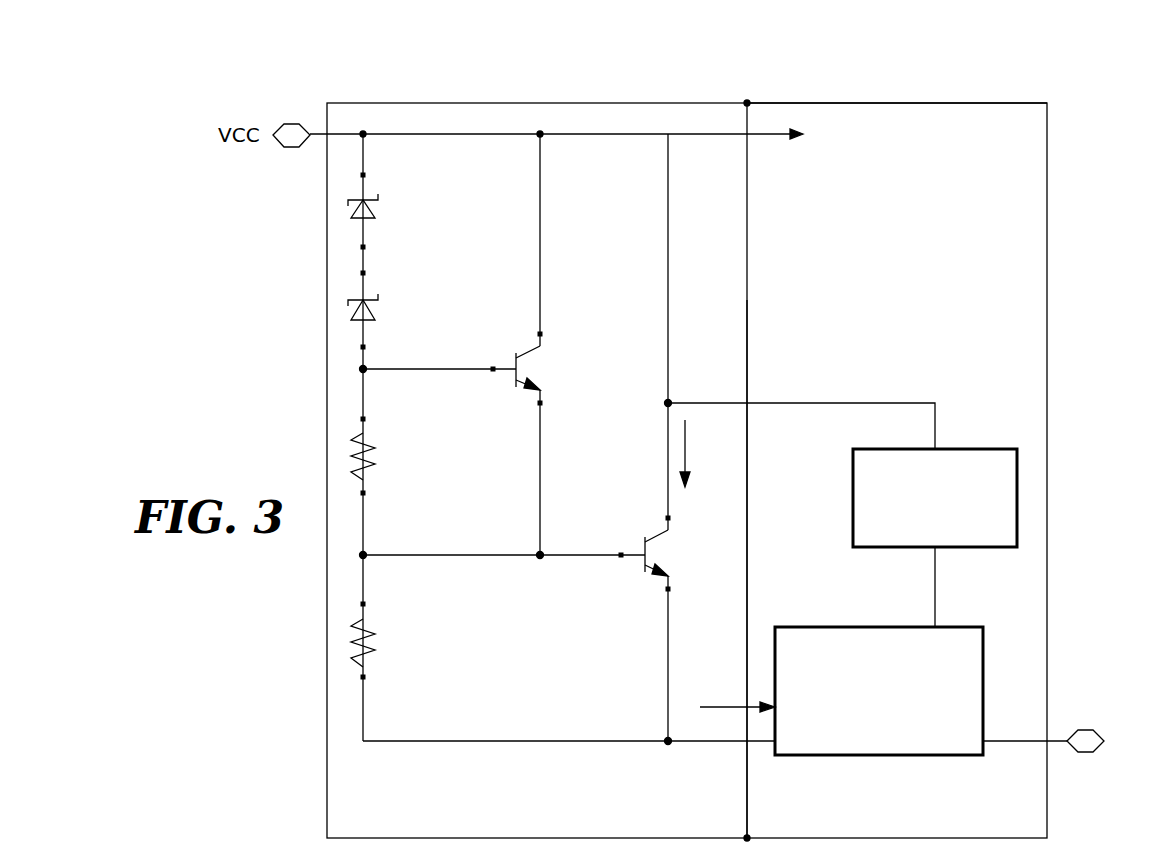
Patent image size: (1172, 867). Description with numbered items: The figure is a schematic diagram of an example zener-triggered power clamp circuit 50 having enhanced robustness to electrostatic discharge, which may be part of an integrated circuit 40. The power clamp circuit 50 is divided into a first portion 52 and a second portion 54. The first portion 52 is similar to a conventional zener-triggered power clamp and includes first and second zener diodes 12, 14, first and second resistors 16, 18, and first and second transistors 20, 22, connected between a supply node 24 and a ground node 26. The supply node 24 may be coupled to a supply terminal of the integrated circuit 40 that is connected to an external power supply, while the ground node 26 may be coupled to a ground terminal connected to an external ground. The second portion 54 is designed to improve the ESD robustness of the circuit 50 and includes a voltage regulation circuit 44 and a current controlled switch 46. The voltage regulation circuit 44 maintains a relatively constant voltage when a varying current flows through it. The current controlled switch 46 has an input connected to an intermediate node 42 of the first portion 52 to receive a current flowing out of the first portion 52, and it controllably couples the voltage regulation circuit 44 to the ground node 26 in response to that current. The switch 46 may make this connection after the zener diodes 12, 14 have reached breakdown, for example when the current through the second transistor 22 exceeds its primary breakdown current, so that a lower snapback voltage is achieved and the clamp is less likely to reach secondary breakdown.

The first zener diode 12 is at (376, 213).
The second zener diode 14 is at (376, 315).
The first resistor 16 is at (370, 474).
The second resistor 18 is at (370, 660).
The first transistor 20 is at (531, 346).
The second transistor 22 is at (657, 536).
The supply node 24 is at (502, 140).
The ground node 26 is at (1018, 742).
The integrated circuit 40 is at (1048, 190).
The intermediate node 42 is at (543, 744).
The voltage regulation circuit 44 is at (989, 447).
The current controlled switch 46 is at (796, 626).
The zener-triggered power clamp circuit 50 is at (783, 70).
The first portion 52 is at (545, 470).
The second portion 54 is at (768, 569).